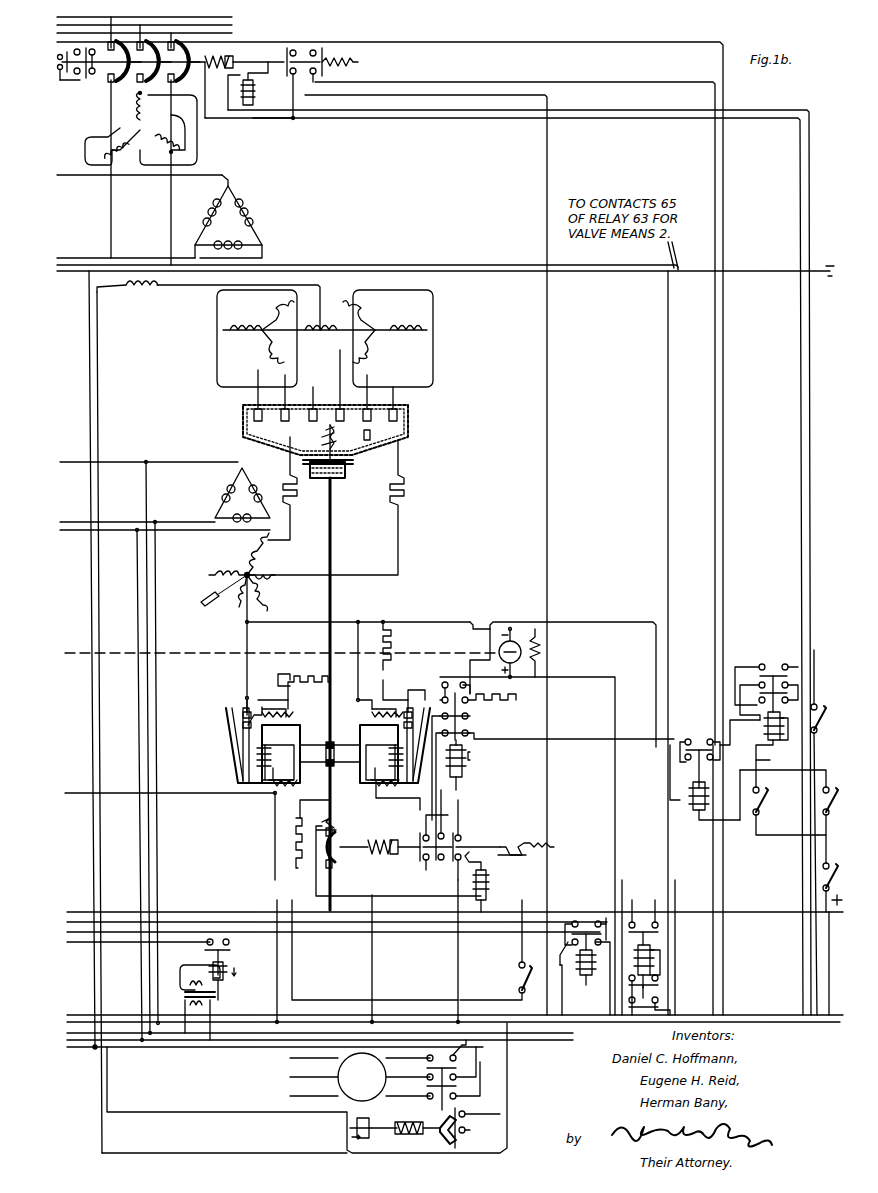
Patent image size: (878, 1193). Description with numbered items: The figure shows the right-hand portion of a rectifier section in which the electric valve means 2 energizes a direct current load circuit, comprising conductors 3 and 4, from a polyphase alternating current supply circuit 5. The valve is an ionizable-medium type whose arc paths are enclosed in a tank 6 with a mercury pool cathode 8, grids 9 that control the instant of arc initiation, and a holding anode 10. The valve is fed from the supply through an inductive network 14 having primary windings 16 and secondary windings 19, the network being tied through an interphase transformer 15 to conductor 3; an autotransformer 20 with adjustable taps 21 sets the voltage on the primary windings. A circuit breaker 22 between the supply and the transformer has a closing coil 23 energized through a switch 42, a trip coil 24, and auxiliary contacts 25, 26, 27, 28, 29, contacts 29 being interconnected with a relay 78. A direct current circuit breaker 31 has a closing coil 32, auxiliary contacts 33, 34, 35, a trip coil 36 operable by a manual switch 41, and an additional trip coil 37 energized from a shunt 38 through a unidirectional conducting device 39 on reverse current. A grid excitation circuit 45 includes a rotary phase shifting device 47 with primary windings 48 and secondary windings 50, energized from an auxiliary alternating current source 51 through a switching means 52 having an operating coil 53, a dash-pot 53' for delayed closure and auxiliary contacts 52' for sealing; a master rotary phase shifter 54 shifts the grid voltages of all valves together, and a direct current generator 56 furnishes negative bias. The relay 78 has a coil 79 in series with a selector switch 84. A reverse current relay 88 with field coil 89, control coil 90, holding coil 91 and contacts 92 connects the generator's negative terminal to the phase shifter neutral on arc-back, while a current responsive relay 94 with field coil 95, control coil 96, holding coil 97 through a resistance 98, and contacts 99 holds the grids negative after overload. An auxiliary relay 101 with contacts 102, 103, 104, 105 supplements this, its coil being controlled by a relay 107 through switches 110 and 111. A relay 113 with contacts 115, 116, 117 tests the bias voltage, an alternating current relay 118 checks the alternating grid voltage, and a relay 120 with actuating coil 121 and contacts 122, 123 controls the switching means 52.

The electric valve means 2 is at (466, 439).
The conductor 3 is at (742, 271).
The conductor 4 is at (776, 910).
The polyphase alternating current supply circuit 5 is at (232, 14).
The receptacle or tank 6 is at (408, 412).
The mercury pool cathode 8 is at (345, 480).
The control members or grids 9 is at (378, 434).
The holding anodes 10 is at (364, 436).
The inductive network 14 is at (333, 359).
The interphase transformer 15 is at (134, 290).
The primary windings 16 is at (212, 220).
The secondary windings 19 is at (282, 308).
The autotransformer 20 is at (224, 155).
The adjustable taps 21 is at (145, 113).
The circuit breaker 22 is at (134, 80).
The closing coil 23 is at (224, 56).
The trip coil 24 is at (256, 92).
The auxiliary contact 25 is at (62, 72).
The auxiliary contacts 26 is at (76, 80).
The auxiliary contact 27 is at (90, 76).
The auxiliary contact 28 is at (289, 48).
The contacts 29 is at (312, 48).
The direct current circuit breaker 31 is at (406, 878).
The closing coil 32 is at (380, 838).
The auxiliary contacts 33 is at (462, 833).
The auxiliary contacts 34 is at (438, 858).
The auxiliary contacts 35 is at (421, 836).
The trip coil 36 is at (488, 880).
The additional trip coil 37 is at (486, 903).
The shunt 38 is at (336, 822).
The unidirectional conducting device 39 is at (316, 812).
The switch 41 is at (520, 978).
The switch 42 is at (820, 730).
The grid excitation circuit 45 is at (214, 562).
The rotary phase shifting device 47 is at (262, 550).
The primary windings 48 is at (242, 495).
The secondary windings 50 is at (262, 597).
The auxiliary source of alternating current 51 is at (420, 1093).
The switching means 52 is at (477, 1117).
The auxiliary contacts 52' is at (472, 1136).
The operating coil 53 is at (403, 1131).
The dash-pot 53' is at (359, 1128).
The master rotary phase shifter 54 is at (360, 1077).
The direct current generator 56 is at (531, 624).
The relay 78 is at (780, 655).
The coil 79 is at (778, 735).
The selector switch 84 is at (760, 804).
The reverse current relay 88 is at (362, 778).
The field coil 89 is at (396, 788).
The control coil 90 is at (398, 755).
The holding coil 91 is at (378, 705).
The contacts 92 is at (412, 705).
The current responsive relay 94 is at (238, 775).
The field coil 95 is at (268, 790).
The control coil 96 is at (272, 755).
The holding coil 97 is at (268, 705).
The resistance 98 is at (304, 687).
The contacts 99 is at (247, 705).
The auxiliary relay 101 is at (494, 772).
The contacts 102 is at (465, 682).
The contacts 103 is at (494, 700).
The contacts 104 is at (470, 716).
The contacts 105 is at (470, 732).
The relay 107 is at (710, 727).
The switch 110 is at (795, 802).
The switch 111 is at (837, 873).
The relay 113 is at (704, 958).
The contacts 115 is at (660, 925).
The contacts 116 is at (660, 977).
The contacts 117 is at (660, 1000).
The alternating current relay 118 is at (192, 960).
The relay 120 is at (598, 908).
The actuating coil 121 is at (590, 975).
The contacts 122 is at (606, 915).
The contacts 123 is at (568, 962).